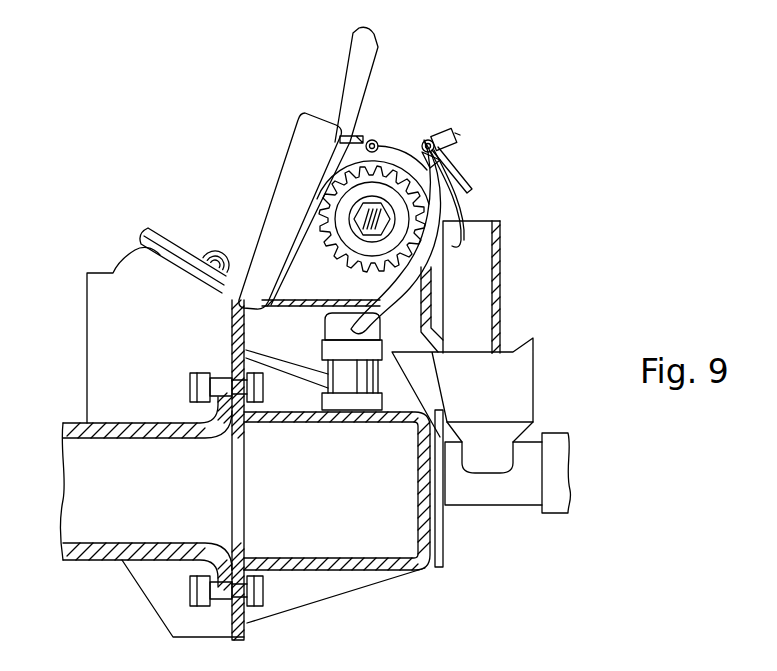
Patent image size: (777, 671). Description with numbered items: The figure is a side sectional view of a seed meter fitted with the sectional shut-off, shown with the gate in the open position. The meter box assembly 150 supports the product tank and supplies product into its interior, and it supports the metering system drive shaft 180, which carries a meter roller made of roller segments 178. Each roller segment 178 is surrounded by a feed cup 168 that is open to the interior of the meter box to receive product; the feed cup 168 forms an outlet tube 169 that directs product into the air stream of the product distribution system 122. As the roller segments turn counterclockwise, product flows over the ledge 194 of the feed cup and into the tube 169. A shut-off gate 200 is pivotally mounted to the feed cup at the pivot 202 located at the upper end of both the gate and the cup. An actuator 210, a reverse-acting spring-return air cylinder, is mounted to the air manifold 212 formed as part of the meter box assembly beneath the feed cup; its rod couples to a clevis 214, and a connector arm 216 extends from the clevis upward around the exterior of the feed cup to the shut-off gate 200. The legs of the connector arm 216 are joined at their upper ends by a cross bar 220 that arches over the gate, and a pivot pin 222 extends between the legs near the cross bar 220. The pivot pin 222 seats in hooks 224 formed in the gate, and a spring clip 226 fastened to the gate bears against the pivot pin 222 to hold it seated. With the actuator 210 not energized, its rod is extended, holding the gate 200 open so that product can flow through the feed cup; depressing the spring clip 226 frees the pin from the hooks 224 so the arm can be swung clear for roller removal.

The product distribution system 122 is at (490, 495).
The meter box assembly 150 is at (147, 343).
The feed cup 168 is at (357, 128).
The outlet tube 169 is at (502, 315).
The roller segment 178 is at (330, 200).
The metering system drive shaft 180 is at (358, 208).
The ledge 194 is at (433, 262).
The shut-off gate 200 is at (463, 213).
The pivot 202 is at (380, 133).
The actuator 210 is at (300, 402).
The air manifold 212 is at (320, 570).
The clevis 214 is at (326, 323).
The connector arm 216 is at (432, 208).
The cross bar 220 is at (455, 147).
The pivot pin 222 is at (428, 140).
The hooks 224 is at (458, 134).
The spring clip 226 is at (450, 174).